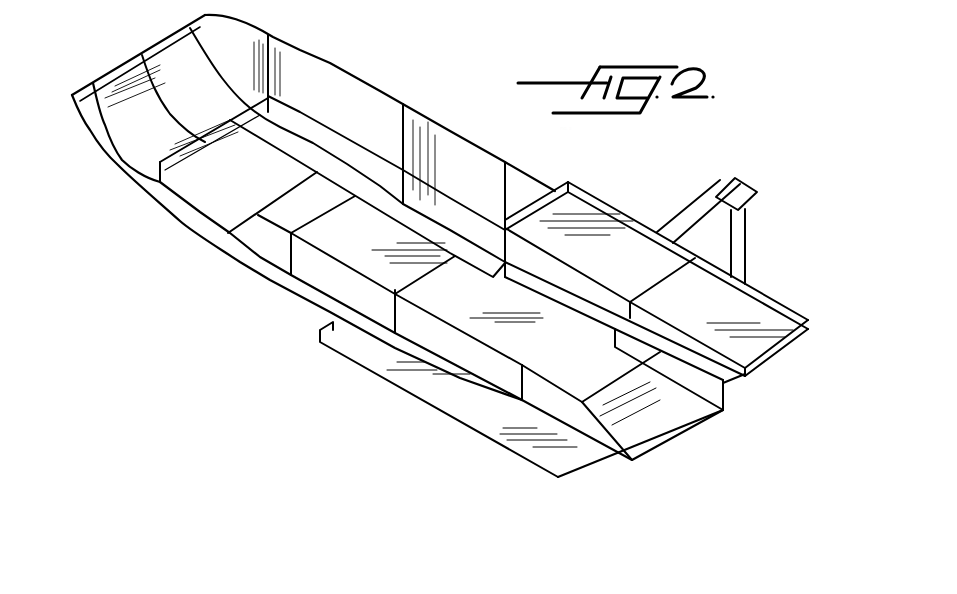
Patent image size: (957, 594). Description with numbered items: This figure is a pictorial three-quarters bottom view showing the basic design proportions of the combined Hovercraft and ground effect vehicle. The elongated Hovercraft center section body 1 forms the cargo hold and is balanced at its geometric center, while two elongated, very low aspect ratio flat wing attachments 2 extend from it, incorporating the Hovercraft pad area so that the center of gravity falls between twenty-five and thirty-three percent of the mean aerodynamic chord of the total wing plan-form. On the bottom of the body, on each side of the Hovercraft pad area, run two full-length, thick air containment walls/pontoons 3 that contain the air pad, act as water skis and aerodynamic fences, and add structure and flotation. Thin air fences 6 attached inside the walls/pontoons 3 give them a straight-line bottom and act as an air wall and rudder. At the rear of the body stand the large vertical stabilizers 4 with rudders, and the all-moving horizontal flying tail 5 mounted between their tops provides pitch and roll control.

The center section body 1 is at (375, 87).
The flat wing attachments 2 is at (810, 326).
The air containment walls/pontoons 3 is at (283, 292).
The vertical stabilizers 4 is at (747, 257).
The horizontal flying tail 5 is at (753, 190).
The air fences 6 is at (725, 396).